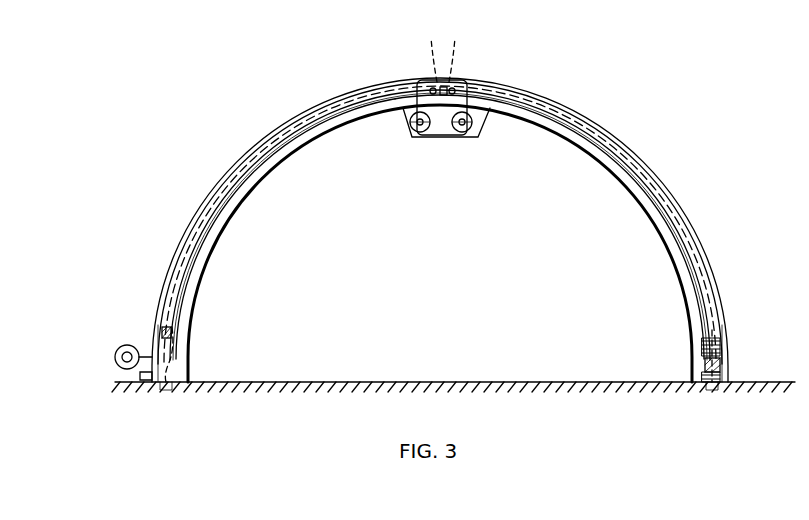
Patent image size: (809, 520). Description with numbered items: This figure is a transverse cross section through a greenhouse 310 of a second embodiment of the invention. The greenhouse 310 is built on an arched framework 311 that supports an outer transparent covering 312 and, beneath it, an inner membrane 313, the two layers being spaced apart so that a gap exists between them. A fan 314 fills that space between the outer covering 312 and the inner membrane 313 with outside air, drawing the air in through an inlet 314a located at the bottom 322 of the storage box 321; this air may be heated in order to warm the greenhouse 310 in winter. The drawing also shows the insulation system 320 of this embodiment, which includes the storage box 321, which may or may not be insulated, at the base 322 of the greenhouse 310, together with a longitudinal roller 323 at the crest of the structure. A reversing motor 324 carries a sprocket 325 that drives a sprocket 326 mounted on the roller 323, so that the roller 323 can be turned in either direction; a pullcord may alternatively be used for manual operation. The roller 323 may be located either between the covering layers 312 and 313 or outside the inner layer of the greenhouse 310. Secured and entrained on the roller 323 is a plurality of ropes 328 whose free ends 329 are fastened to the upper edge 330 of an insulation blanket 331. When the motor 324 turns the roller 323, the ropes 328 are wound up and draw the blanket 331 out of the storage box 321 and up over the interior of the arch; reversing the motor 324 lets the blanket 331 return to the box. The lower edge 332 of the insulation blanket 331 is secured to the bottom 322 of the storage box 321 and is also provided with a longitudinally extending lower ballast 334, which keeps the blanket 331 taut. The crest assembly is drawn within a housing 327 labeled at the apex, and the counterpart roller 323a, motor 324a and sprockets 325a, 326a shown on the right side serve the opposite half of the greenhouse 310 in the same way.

The greenhouse 310 is at (632, 144).
The arched framework 311 is at (264, 180).
The outer transparent covering 312 is at (200, 230).
The inner membrane 313 is at (218, 244).
The fan 314 is at (124, 344).
The inlet 314a is at (146, 382).
The insulation system 320 is at (242, 152).
The storage box 321 is at (157, 320).
The bottom of the storage box 322 is at (172, 384).
The longitudinal roller 323 is at (433, 87).
The longitudinal roller 323a is at (452, 87).
The reversing motor 324 is at (422, 134).
The reversing motor 324a is at (460, 134).
The sprocket 325 is at (414, 128).
The sprocket 325a is at (468, 128).
The sprocket 326 is at (416, 51).
The sprocket 326a is at (480, 51).
The roller housing 327 is at (408, 122).
The ropes 328 is at (405, 90).
The free ends of the ropes 329 is at (398, 94).
The upper edge of the insulation blanket 330 is at (392, 98).
The insulation blanket 331 is at (312, 116).
The lower edge of the insulation blanket 332 is at (172, 383).
The lower ballast 334 is at (172, 331).